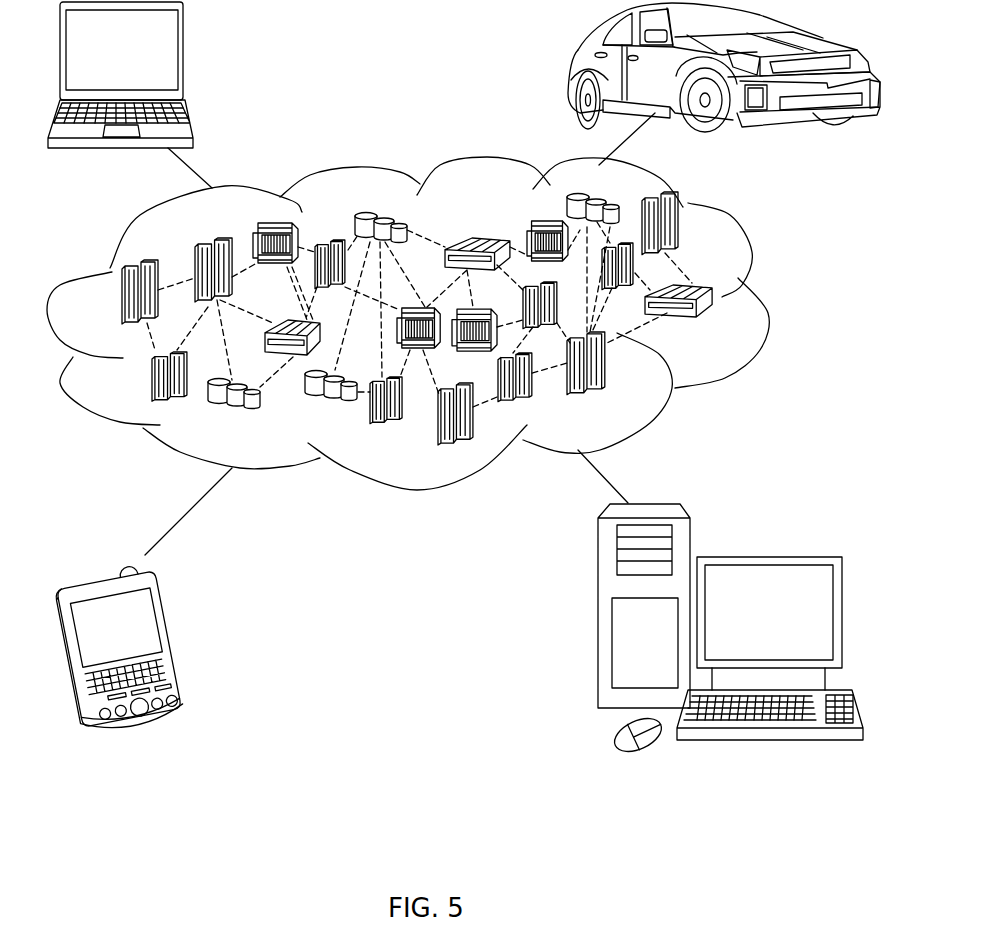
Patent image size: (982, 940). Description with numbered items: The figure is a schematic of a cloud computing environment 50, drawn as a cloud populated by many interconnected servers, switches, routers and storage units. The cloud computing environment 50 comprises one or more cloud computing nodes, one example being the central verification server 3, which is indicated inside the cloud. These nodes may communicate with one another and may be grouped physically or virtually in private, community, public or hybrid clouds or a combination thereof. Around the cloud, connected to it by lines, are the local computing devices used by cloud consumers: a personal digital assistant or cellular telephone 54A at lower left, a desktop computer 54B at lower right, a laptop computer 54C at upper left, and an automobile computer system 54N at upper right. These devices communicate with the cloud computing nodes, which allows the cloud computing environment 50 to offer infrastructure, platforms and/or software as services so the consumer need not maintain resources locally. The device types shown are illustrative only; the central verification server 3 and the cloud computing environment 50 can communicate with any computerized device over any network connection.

The cloud computing environment 50 is at (768, 300).
The central verification server 3 is at (717, 327).
The personal digital assistant (PDA) or cellular telephone 54A is at (173, 638).
The desktop computer 54B is at (767, 556).
The laptop computer 54C is at (183, 57).
The automobile computer system 54N is at (570, 70).